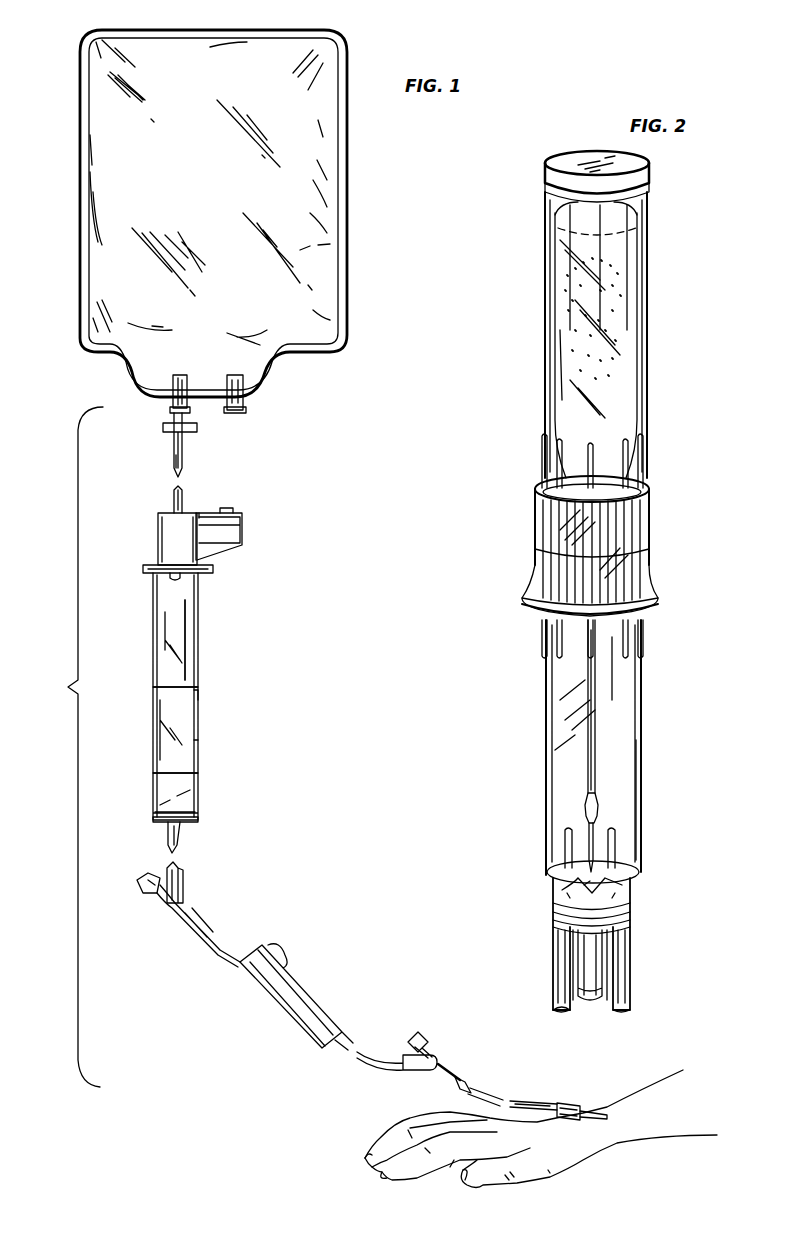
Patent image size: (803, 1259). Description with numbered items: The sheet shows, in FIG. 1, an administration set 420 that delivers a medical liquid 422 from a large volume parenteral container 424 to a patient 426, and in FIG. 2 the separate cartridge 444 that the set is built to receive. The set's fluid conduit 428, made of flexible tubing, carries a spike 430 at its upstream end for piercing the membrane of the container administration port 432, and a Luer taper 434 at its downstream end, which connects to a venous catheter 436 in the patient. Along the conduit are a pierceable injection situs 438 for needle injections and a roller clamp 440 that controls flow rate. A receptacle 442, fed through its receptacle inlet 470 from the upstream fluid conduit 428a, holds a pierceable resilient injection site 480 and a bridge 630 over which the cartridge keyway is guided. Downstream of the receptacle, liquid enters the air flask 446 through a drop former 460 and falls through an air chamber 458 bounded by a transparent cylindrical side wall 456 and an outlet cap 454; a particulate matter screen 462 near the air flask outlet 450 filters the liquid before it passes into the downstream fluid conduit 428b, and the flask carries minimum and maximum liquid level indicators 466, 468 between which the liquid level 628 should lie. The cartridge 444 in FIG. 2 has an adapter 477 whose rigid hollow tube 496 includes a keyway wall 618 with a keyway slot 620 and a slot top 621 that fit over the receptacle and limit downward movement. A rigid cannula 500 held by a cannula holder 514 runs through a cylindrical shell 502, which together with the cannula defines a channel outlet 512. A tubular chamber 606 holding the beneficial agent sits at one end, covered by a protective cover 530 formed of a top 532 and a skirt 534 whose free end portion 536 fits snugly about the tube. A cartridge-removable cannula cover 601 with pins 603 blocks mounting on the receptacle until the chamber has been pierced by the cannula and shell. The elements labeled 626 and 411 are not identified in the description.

In FIG. 1, the administration set 420 is at (64, 747).
In FIG. 1, the liquid 422 is at (340, 245).
In FIG. 1, the large volume parenteral container 424 is at (320, 160).
In FIG. 1, the patient 426 is at (405, 1122).
In FIG. 1, the fluid conduit 428 is at (172, 452).
In FIG. 1, the upstream fluid conduit 428a is at (183, 467).
In FIG. 1, the downstream fluid conduit 428b is at (182, 866).
In FIG. 1, the spike 430 is at (172, 402).
In FIG. 1, the container administration port 432 is at (192, 410).
In FIG. 1, the Luer taper 434 is at (570, 1104).
In FIG. 1, the venous catheter 436 is at (585, 1108).
In FIG. 1, the pierceable injection situs 438 is at (422, 1040).
In FIG. 1, the roller clamp 440 is at (310, 992).
In FIG. 1, the receptacle 442 is at (288, 535).
In FIG. 2, the cartridge 444 is at (470, 580).
In FIG. 1, the air flask 446 is at (128, 663).
In FIG. 1, the air flask outlet 450 is at (190, 825).
In FIG. 1, the outlet cap 454 is at (165, 823).
In FIG. 1, the cylindrical side wall 456 is at (198, 733).
In FIG. 1, the air chamber 458 is at (192, 635).
In FIG. 1, the drop former 460 is at (168, 578).
In FIG. 1, the particulate matter screen 462 is at (198, 798).
In FIG. 1, the minimum liquid level indicator 466 is at (198, 772).
In FIG. 1, the maximum liquid level indicator 468 is at (198, 612).
In FIG. 1, the receptacle inlet 470 is at (172, 502).
In FIG. 2, the adapter 477 is at (508, 735).
In FIG. 1, the injection site 480 is at (233, 508).
In FIG. 2, the hollow tube 496 is at (641, 787).
In FIG. 2, the rigid cannula 500 is at (595, 680).
In FIG. 2, the cylindrical shell 502 is at (597, 828).
In FIG. 2, the channel outlet 512 is at (585, 835).
In FIG. 2, the cannula holder 514 is at (598, 806).
In FIG. 2, the protective cover 530 is at (649, 188).
In FIG. 2, the top 532 is at (575, 158).
In FIG. 2, the skirt 534 is at (647, 350).
In FIG. 2, the free end portion 536 is at (536, 518).
In FIG. 2, the cartridge-removable cannula cover 601 is at (592, 1005).
In FIG. 2, the pins 603 is at (562, 848).
In FIG. 2, the tubular chamber 606 is at (640, 268).
In FIG. 2, the keyway wall 618 is at (555, 958).
In FIG. 2, the keyway slot 620 is at (573, 1012).
In FIG. 2, the slot top 621 is at (613, 942).
In FIG. 2, the vial stopper 626 is at (570, 213).
In FIG. 1, the liquid level 628 is at (198, 700).
In FIG. 1, the bridge 630 is at (205, 513).
In FIG. 2, the piercing member 411 is at (575, 885).